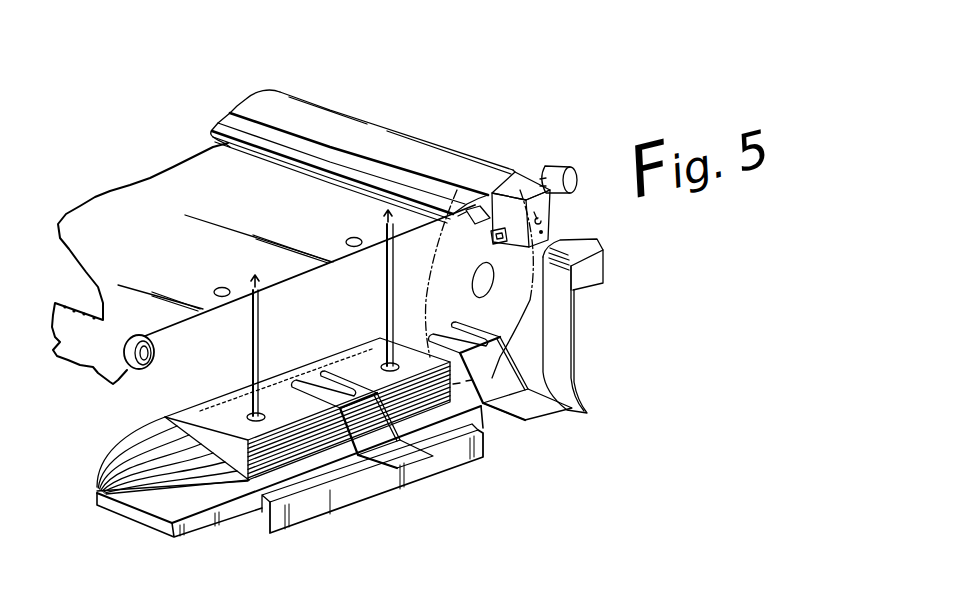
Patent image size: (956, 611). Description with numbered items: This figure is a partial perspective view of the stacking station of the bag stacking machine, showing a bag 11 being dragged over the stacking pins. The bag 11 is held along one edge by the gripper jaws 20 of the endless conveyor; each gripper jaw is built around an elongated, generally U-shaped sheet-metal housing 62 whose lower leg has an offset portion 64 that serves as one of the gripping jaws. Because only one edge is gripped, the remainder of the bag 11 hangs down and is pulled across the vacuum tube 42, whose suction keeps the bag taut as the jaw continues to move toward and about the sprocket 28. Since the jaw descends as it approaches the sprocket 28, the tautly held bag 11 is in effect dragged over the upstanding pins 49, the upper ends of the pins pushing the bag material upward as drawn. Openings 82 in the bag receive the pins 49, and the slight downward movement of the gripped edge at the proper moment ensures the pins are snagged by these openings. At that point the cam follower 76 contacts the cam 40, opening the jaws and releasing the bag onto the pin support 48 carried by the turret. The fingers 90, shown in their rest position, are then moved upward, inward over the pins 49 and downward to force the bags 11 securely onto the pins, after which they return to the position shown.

The bag 11 is at (180, 177).
The gripper jaws 20 is at (369, 119).
The sprocket 28 is at (527, 317).
The cam 40 is at (602, 263).
The vacuum tube 42 is at (150, 351).
The pin support 48 is at (147, 520).
The pins 49 is at (384, 303).
The housing 62 is at (410, 147).
The offset portion 64 is at (212, 127).
The cam follower 76 is at (557, 167).
The openings 82 is at (219, 287).
The fingers 90 is at (400, 454).